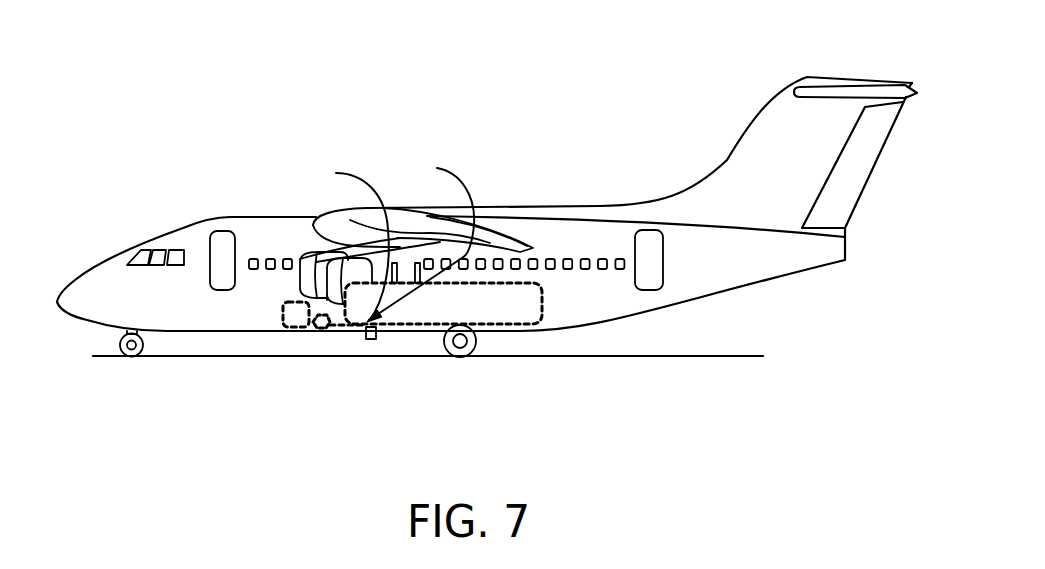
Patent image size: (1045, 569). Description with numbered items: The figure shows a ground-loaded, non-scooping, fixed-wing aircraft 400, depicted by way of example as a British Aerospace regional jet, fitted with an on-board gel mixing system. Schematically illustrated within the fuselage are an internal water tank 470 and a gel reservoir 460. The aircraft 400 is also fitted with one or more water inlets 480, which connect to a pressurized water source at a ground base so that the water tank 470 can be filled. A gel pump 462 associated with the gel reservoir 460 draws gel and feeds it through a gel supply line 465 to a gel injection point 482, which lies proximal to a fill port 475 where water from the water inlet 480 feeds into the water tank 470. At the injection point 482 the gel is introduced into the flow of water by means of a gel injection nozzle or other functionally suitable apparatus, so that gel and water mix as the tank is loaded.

The aircraft 400 is at (520, 127).
The gel reservoir 460 is at (284, 326).
The gel pump 462 is at (319, 329).
The gel supply line 465 is at (347, 328).
The internal water tank 470 is at (517, 306).
The fill port 475 is at (420, 237).
The water inlet 480 is at (377, 338).
The gel injection point 482 is at (337, 240).